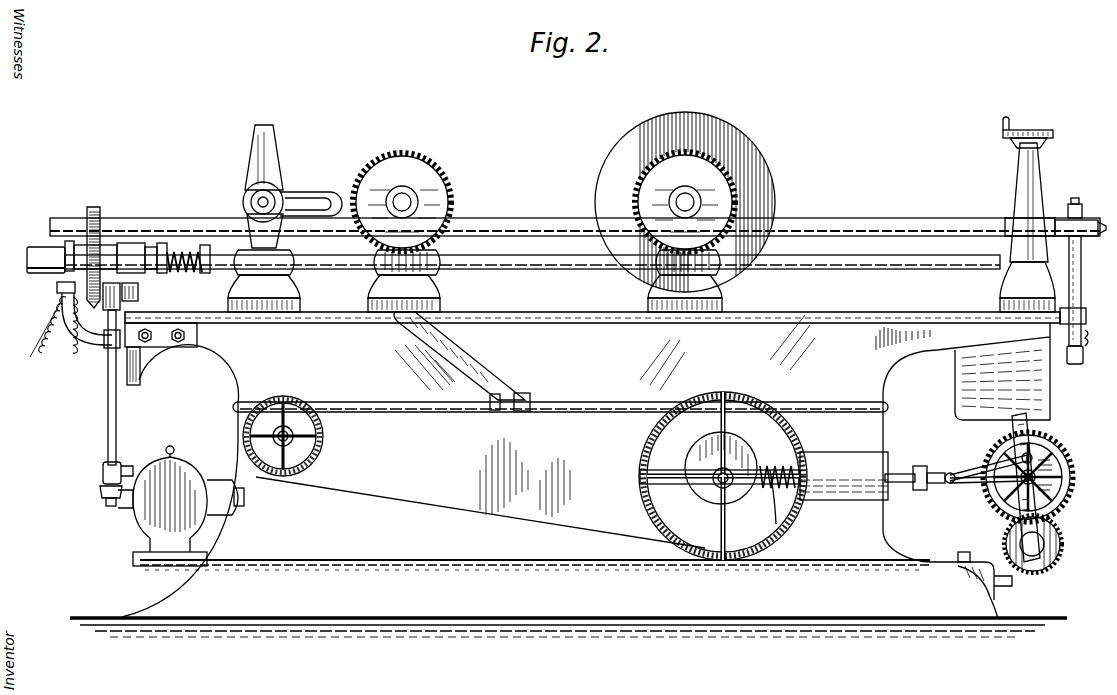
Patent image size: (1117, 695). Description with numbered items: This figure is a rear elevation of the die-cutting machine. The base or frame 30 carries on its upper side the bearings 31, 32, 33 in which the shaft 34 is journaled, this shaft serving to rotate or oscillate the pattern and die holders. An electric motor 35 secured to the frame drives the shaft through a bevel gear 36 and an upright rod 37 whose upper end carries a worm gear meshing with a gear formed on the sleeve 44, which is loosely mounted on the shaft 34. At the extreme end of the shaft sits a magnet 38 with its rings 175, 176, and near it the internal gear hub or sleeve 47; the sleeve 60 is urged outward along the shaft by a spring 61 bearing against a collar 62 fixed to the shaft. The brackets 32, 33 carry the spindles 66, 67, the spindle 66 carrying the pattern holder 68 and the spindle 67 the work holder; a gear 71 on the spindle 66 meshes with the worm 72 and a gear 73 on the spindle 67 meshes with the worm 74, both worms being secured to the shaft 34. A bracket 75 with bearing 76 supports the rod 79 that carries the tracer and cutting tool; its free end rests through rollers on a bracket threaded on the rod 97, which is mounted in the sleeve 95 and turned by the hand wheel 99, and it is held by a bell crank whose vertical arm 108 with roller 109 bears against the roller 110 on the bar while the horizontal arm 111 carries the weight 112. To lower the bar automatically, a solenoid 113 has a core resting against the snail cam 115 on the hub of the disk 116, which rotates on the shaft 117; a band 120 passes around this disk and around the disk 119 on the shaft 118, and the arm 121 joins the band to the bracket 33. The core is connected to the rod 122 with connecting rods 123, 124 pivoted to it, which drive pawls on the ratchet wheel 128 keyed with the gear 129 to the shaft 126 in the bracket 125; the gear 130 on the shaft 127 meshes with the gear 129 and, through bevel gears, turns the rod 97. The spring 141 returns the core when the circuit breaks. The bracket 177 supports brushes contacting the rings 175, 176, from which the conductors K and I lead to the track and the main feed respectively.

The base or frame 30 is at (568, 474).
The bearing 31 is at (1018, 286).
The bearing 32 is at (724, 300).
The bearing 33 is at (440, 298).
The shaft 34 is at (860, 258).
The electric motor 35 is at (160, 508).
The bevel gear 36 is at (108, 500).
The rod 37 is at (108, 432).
The magnet 38 is at (40, 278).
The sleeve 44 is at (128, 243).
The hub or sleeve 47 is at (66, 253).
The sleeve 60 is at (160, 247).
The spring 61 is at (185, 250).
The collar 62 is at (205, 249).
The spindle 66 is at (688, 198).
The spindle 67 is at (410, 198).
The pattern holder 68 is at (752, 156).
The gear 71 is at (713, 162).
The worm 72 is at (712, 252).
The gear 73 is at (445, 208).
The worm 74 is at (452, 248).
The bracket 75 is at (298, 305).
The bearing 76 is at (280, 196).
The rod or bar 79 is at (950, 222).
The sleeve 95 is at (1040, 152).
The rod 97 is at (1040, 192).
The hand wheel 99 is at (1054, 135).
The vertical arm 108 is at (1082, 268).
The roller 109 is at (1080, 214).
The roller 110 is at (1084, 239).
The horizontal arm 111 is at (1084, 355).
The weight 112 is at (1086, 316).
The solenoid 113 is at (826, 500).
The snail cam 115 is at (690, 470).
The disk or wheel 116 is at (647, 440).
The shaft 117 is at (716, 486).
The shaft 118 is at (292, 441).
The disk or wheel 119 is at (324, 437).
The band or wire 120 is at (403, 500).
The arm 121 is at (484, 376).
The rod 122 is at (893, 478).
The connecting rod 123 is at (975, 468).
The connecting rod 124 is at (978, 486).
The bracket 125 is at (1000, 576).
The shaft 126 is at (1048, 470).
The shaft 127 is at (1050, 540).
The ratchet wheel 128 is at (1062, 455).
The gear 129 is at (1040, 478).
The gear 130 is at (1063, 548).
The spring 141 is at (776, 524).
The ring 175 is at (66, 250).
The ring 176 is at (92, 207).
The bracket 177 is at (92, 342).
The wire or conductor K is at (41, 336).
The wire or conductor I is at (71, 338).